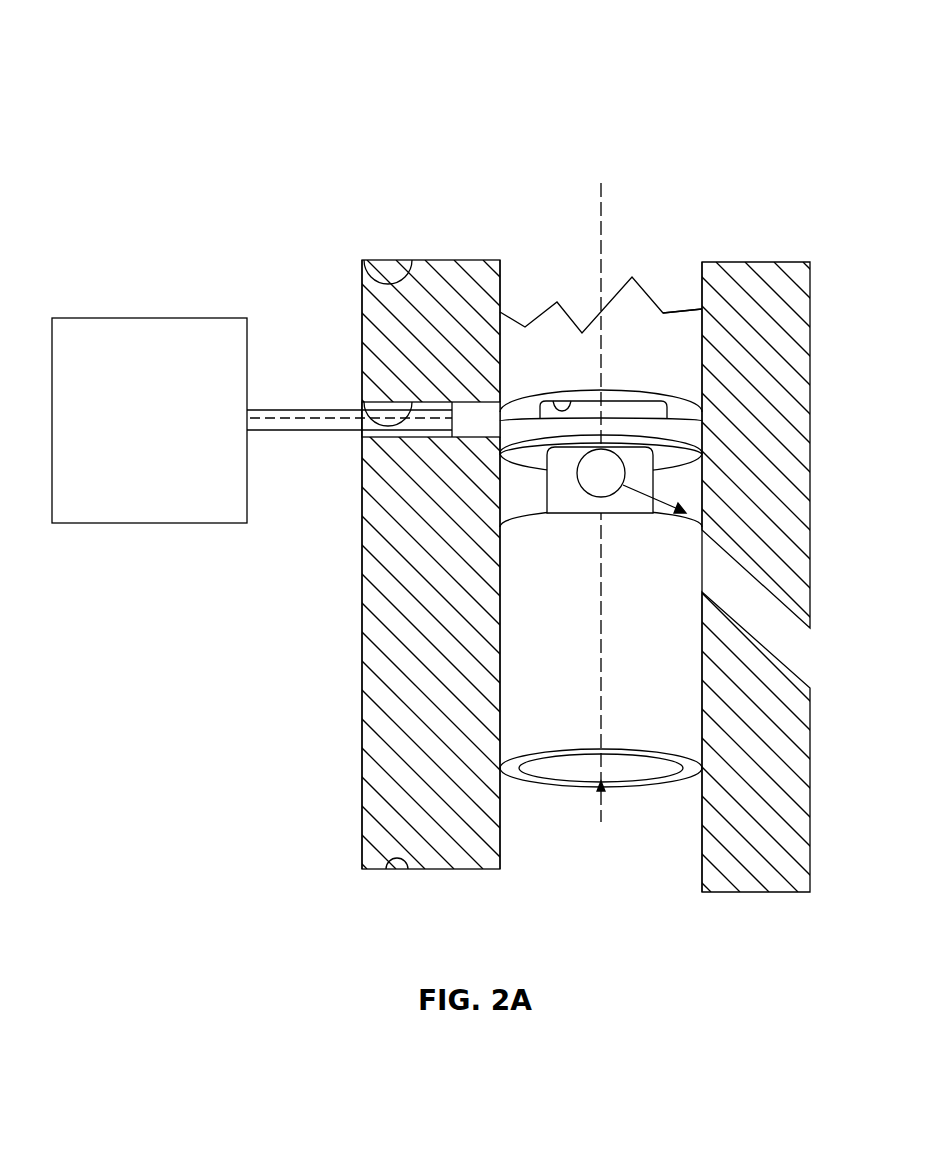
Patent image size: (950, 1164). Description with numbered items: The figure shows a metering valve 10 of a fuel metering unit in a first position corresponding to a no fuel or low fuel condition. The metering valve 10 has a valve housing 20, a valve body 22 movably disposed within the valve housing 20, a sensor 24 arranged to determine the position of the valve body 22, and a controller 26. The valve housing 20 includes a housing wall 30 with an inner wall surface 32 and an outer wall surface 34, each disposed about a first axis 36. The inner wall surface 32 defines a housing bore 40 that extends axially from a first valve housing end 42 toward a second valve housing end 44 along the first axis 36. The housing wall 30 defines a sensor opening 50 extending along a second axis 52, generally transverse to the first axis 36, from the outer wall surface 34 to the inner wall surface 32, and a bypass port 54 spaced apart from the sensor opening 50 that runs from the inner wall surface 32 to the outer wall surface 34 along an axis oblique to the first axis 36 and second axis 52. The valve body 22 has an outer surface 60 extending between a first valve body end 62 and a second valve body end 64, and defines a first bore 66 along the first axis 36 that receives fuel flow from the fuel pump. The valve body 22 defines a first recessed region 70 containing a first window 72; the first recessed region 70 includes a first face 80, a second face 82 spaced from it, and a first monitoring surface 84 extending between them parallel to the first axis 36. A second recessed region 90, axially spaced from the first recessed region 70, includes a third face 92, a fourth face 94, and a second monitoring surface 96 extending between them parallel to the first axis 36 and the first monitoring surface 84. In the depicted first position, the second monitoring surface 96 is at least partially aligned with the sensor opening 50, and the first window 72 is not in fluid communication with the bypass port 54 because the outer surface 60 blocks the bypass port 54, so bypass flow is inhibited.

The metering valve 10 is at (82, 40).
The valve housing 20 is at (475, 561).
The valve body 22 is at (634, 256).
The sensor 24 is at (470, 423).
The controller 26 is at (147, 523).
The housing wall 30 is at (457, 846).
The inner wall surface 32 is at (500, 843).
The outer wall surface 34 is at (362, 840).
The first axis 36 is at (598, 206).
The housing bore 40 is at (506, 276).
The first valve housing end 42 is at (368, 264).
The second valve housing end 44 is at (405, 870).
The sensor opening 50 is at (375, 403).
The second axis 52 is at (312, 425).
The bypass port 54 is at (768, 590).
The outer surface 60 is at (672, 726).
The first valve body end 62 is at (667, 325).
The second valve body end 64 is at (657, 752).
The first bore 66 is at (563, 766).
The first recessed region 70 is at (644, 436).
The first window 72 is at (601, 498).
The first face 80 is at (708, 454).
The second face 82 is at (527, 512).
The first monitoring surface 84 is at (633, 505).
The second recessed region 90 is at (708, 410).
The third face 92 is at (571, 402).
The fourth face 94 is at (582, 404).
The second monitoring surface 96 is at (613, 405).